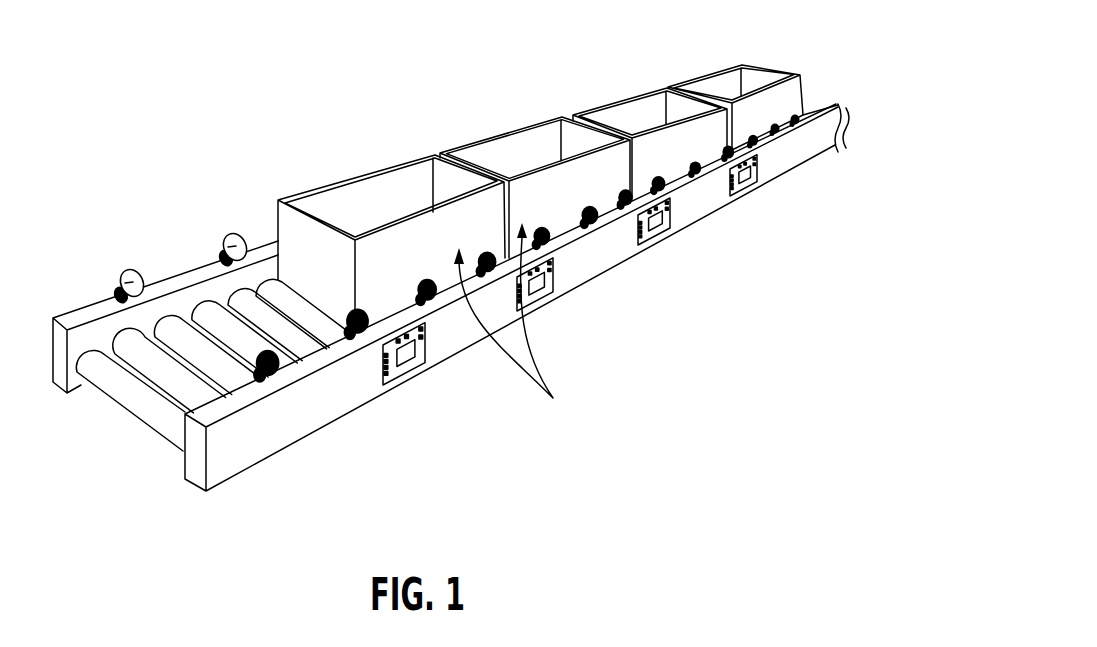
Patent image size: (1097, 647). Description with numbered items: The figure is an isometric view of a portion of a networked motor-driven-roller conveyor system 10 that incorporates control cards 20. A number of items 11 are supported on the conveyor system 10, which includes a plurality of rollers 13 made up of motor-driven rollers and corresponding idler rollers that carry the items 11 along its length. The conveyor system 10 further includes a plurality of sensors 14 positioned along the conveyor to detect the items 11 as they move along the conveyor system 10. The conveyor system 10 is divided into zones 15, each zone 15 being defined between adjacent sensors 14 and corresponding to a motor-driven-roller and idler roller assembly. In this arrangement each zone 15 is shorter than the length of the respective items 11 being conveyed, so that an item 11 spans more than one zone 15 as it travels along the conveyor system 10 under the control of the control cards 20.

The conveyor system 10 is at (360, 62).
The items 11 is at (467, 143).
The rollers 13 is at (157, 418).
The sensors 14 is at (222, 249).
The zones 15 is at (516, 322).
The control cards 20 is at (378, 387).